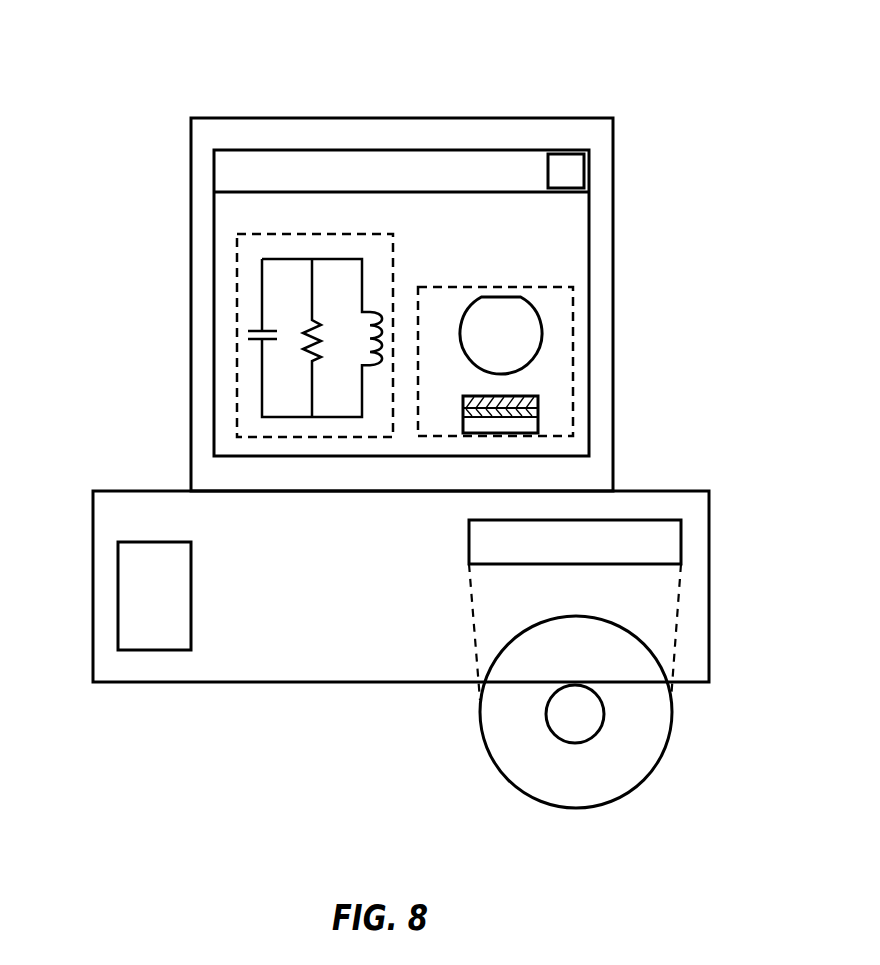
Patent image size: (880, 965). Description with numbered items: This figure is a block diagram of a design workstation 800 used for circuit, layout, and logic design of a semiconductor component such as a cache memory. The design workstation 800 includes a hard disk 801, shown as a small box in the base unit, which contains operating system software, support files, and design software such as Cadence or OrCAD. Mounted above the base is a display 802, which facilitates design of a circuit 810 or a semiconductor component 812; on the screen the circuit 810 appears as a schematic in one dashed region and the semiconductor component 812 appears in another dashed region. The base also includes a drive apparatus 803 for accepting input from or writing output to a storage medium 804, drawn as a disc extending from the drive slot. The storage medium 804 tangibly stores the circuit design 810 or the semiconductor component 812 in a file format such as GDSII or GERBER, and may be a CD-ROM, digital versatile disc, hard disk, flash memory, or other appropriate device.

The design workstation 800 is at (416, 421).
The hard disk 801 is at (192, 568).
The display 802 is at (568, 117).
The drive apparatus 803 is at (670, 518).
The storage medium 804 is at (572, 809).
The circuit design 810 is at (393, 248).
The semiconductor component 812 is at (487, 286).